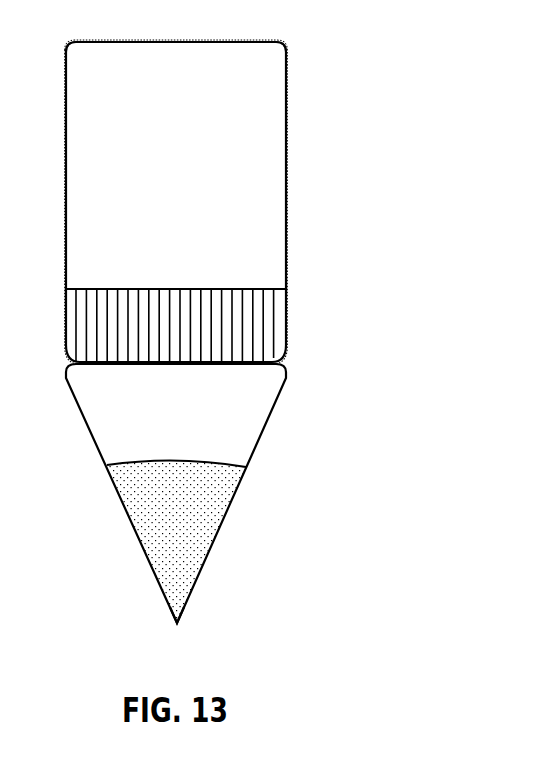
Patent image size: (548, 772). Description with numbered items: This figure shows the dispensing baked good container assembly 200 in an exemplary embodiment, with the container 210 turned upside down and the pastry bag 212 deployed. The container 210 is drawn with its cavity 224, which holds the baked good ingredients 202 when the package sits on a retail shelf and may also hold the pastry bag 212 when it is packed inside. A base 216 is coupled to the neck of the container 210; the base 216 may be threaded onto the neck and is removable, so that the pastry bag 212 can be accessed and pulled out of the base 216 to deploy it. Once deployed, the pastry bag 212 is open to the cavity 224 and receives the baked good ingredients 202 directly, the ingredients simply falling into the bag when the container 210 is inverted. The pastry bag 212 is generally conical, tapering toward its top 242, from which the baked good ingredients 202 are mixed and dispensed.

The container assembly 200 is at (392, 63).
The container 210 is at (286, 185).
The cavity 224 is at (273, 110).
The base 216 is at (286, 322).
The pastry bag 212 is at (273, 408).
The baked good ingredients 202 is at (215, 503).
The top 242 is at (178, 622).